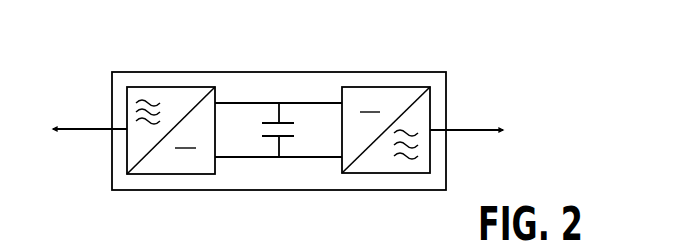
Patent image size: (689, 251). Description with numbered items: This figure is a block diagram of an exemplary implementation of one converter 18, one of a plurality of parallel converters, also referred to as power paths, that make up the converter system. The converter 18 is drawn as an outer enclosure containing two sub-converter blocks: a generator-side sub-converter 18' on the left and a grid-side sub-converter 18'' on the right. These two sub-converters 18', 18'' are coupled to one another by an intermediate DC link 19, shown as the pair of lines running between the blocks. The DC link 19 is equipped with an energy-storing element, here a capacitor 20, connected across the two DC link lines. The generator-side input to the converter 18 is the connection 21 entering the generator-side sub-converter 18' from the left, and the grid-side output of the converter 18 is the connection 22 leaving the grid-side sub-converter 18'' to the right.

The converter 18 is at (292, 99).
The generator-side sub-converter 18' is at (171, 102).
The grid-side sub-converter 18'' is at (418, 132).
The intermediate DC link 19 is at (250, 103).
The capacitor 20 is at (287, 122).
The generator-side input 21 is at (80, 128).
The grid-side output 22 is at (479, 129).